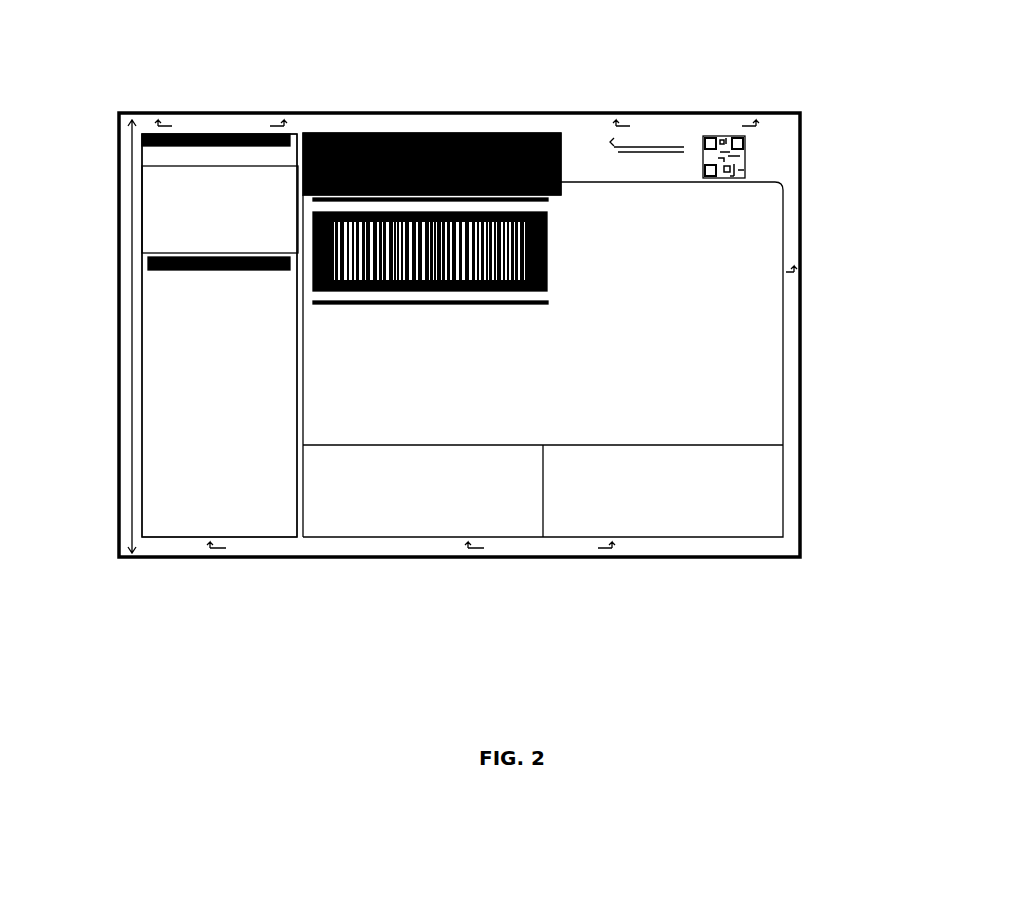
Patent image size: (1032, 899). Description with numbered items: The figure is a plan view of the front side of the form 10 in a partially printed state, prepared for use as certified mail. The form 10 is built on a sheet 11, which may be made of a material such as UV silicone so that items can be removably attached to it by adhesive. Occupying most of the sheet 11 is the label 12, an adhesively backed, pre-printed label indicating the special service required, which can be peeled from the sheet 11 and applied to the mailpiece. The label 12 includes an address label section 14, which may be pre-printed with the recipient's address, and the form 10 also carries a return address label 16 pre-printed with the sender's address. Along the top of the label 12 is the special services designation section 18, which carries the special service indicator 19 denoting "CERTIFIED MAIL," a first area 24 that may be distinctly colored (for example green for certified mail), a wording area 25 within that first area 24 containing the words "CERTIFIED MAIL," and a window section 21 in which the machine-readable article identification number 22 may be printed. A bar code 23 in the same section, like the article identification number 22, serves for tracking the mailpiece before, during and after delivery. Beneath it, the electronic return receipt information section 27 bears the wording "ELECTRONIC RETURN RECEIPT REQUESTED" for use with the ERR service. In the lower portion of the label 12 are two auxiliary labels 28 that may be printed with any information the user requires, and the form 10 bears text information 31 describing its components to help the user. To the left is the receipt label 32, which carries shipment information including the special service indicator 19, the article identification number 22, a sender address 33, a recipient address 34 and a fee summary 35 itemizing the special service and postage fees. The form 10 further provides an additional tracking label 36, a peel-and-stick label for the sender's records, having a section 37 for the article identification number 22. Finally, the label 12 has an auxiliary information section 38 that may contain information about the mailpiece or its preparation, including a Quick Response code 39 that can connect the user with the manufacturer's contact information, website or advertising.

The form 10 is at (884, 132).
The sheet 11 is at (805, 462).
The label 12 is at (785, 206).
The address label section 14 is at (715, 402).
The return address label 16 is at (155, 208).
The special services designation section 18 is at (562, 182).
The special service indicator 19 is at (518, 133).
The window section 21 is at (548, 283).
The article identification number 22 is at (377, 318).
The bar code 23 is at (442, 320).
The first area 24 is at (376, 133).
The wording area 25 is at (420, 133).
The electronic return receipt information section 27 is at (548, 311).
The auxiliary label 28 is at (500, 510).
The text information 31 is at (142, 305).
The receipt label 32 is at (165, 517).
The sender address 33 is at (148, 357).
The recipient address 34 is at (148, 418).
The fee summary 35 is at (155, 468).
The additional tracking label 36 is at (145, 160).
The section 37 is at (292, 155).
The auxiliary information section 38 is at (694, 140).
The Quick Response code 39 is at (753, 162).